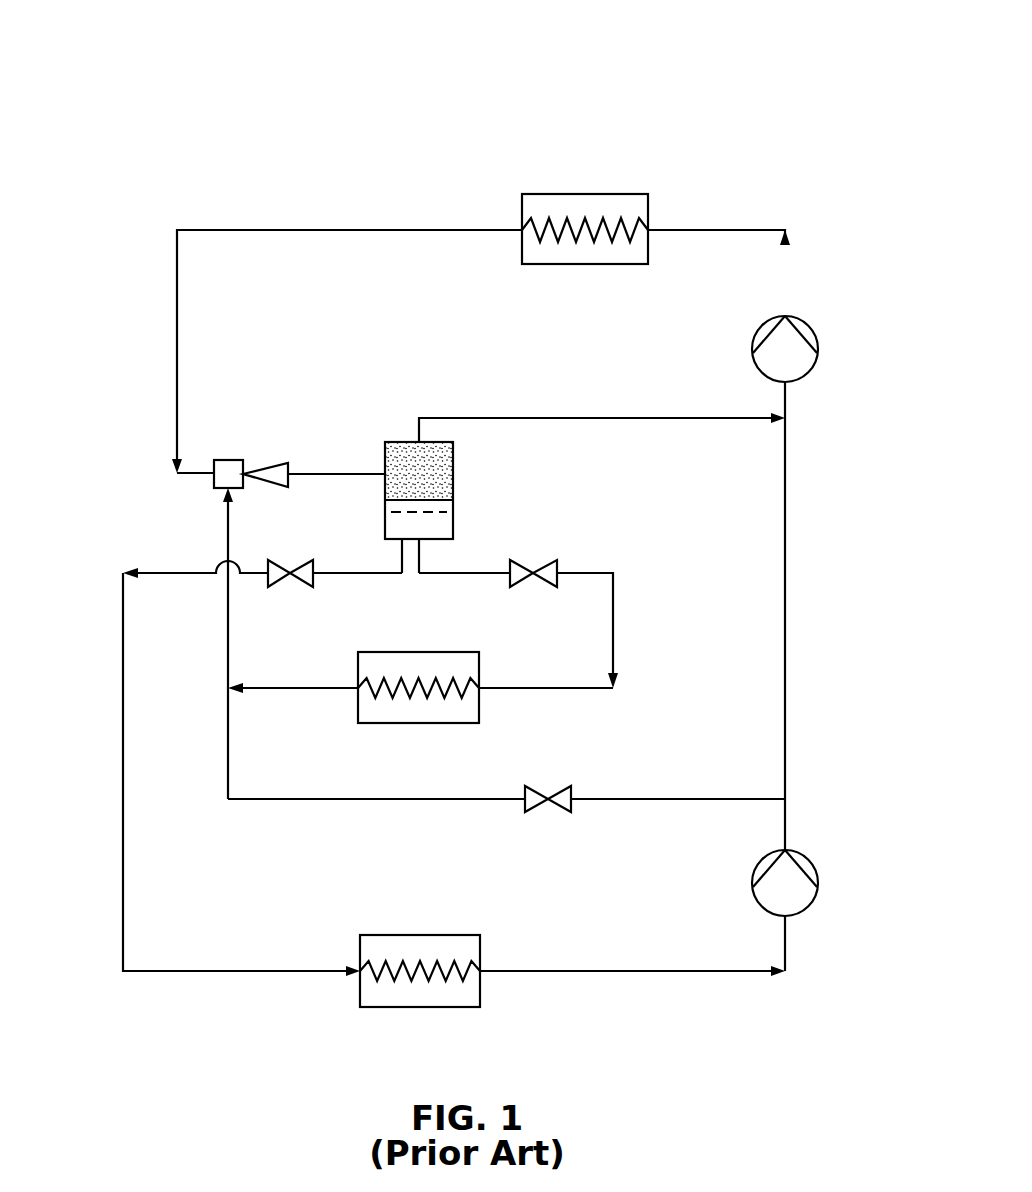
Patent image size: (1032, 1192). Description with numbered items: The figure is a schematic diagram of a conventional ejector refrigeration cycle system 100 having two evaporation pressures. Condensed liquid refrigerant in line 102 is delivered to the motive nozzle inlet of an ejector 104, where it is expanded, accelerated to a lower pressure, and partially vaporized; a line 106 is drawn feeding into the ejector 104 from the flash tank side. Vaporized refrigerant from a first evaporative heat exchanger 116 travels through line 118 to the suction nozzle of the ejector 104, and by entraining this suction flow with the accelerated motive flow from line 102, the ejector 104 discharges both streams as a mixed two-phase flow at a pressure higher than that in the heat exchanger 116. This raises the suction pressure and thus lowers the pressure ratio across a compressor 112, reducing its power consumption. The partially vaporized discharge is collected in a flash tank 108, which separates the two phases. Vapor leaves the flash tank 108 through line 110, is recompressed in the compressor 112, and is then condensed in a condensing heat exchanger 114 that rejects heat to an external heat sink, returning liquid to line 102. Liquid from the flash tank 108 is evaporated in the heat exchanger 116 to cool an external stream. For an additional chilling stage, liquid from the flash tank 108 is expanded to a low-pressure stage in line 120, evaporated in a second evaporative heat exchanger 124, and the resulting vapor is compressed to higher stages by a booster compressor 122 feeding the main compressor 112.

The ejector refrigeration cycle system 100 is at (809, 46).
The line 102 is at (357, 230).
The ejector 104 is at (228, 460).
The gas supply line with regulator 106 is at (336, 474).
The flash tank 108 is at (453, 458).
The line 110 is at (578, 418).
The compressor 112 is at (818, 349).
The condensing heat exchanger 114 is at (582, 194).
The first evaporative heat exchanger 116 is at (479, 700).
The line 118 is at (323, 688).
The line 120 is at (123, 818).
The booster compressor 122 is at (818, 883).
The second evaporative heat exchanger 124 is at (420, 1007).